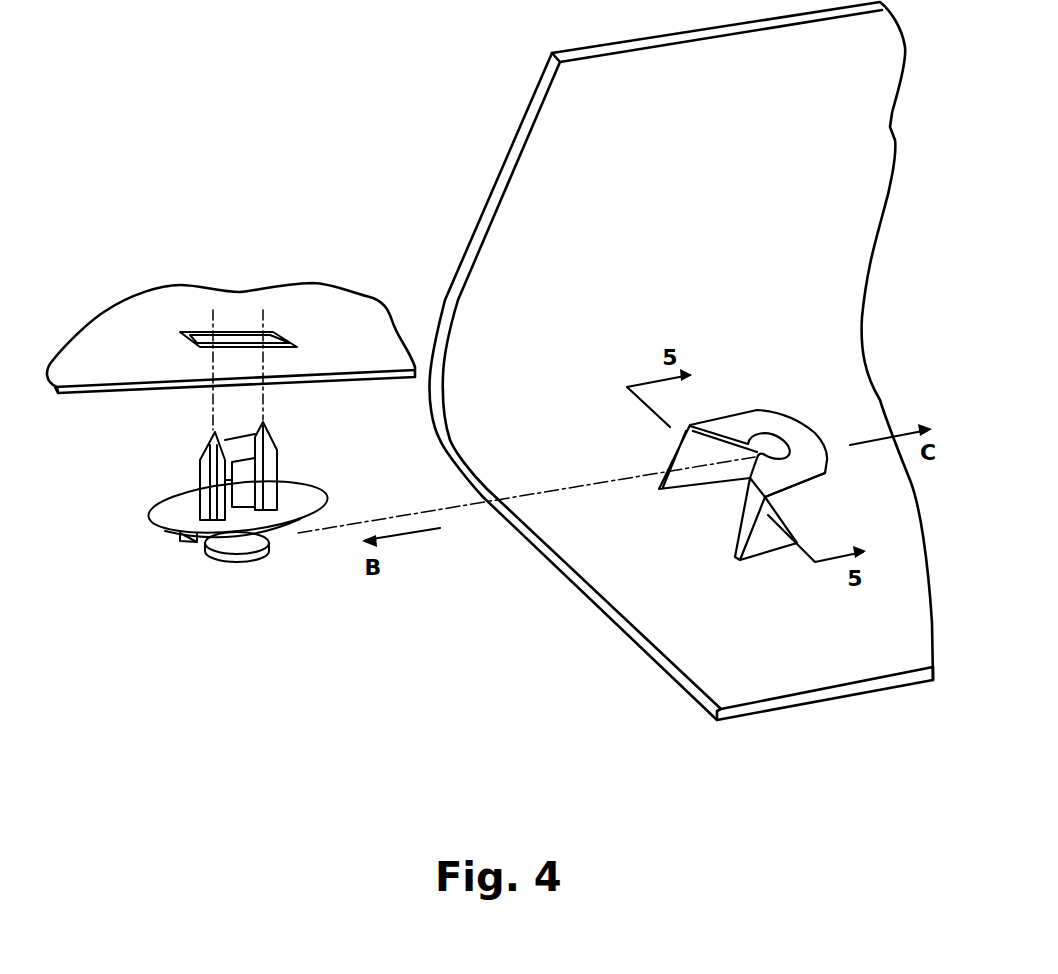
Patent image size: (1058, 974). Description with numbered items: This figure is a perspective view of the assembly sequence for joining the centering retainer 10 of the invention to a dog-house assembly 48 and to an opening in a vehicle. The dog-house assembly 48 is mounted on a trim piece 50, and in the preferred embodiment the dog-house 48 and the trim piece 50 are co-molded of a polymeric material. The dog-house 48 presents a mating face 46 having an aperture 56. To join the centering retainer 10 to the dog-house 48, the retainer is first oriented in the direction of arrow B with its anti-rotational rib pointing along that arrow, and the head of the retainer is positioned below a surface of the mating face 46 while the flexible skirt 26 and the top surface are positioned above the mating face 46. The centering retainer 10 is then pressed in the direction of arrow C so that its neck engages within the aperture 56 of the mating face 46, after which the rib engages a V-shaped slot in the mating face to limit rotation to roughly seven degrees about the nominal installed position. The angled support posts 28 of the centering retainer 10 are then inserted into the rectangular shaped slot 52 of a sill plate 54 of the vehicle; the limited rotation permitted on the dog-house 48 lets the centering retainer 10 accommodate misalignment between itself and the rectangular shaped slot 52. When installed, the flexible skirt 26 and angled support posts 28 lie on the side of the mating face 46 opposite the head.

The centering retainer 10 is at (198, 529).
The flexible skirt 26 is at (165, 527).
The angled support posts 28 is at (207, 445).
The mating face 46 is at (797, 437).
The dog-house assembly 48 is at (758, 543).
The trim piece 50 is at (858, 643).
The rectangular shaped slot 52 is at (270, 335).
The sill plate 54 is at (150, 320).
The aperture 56 is at (768, 432).